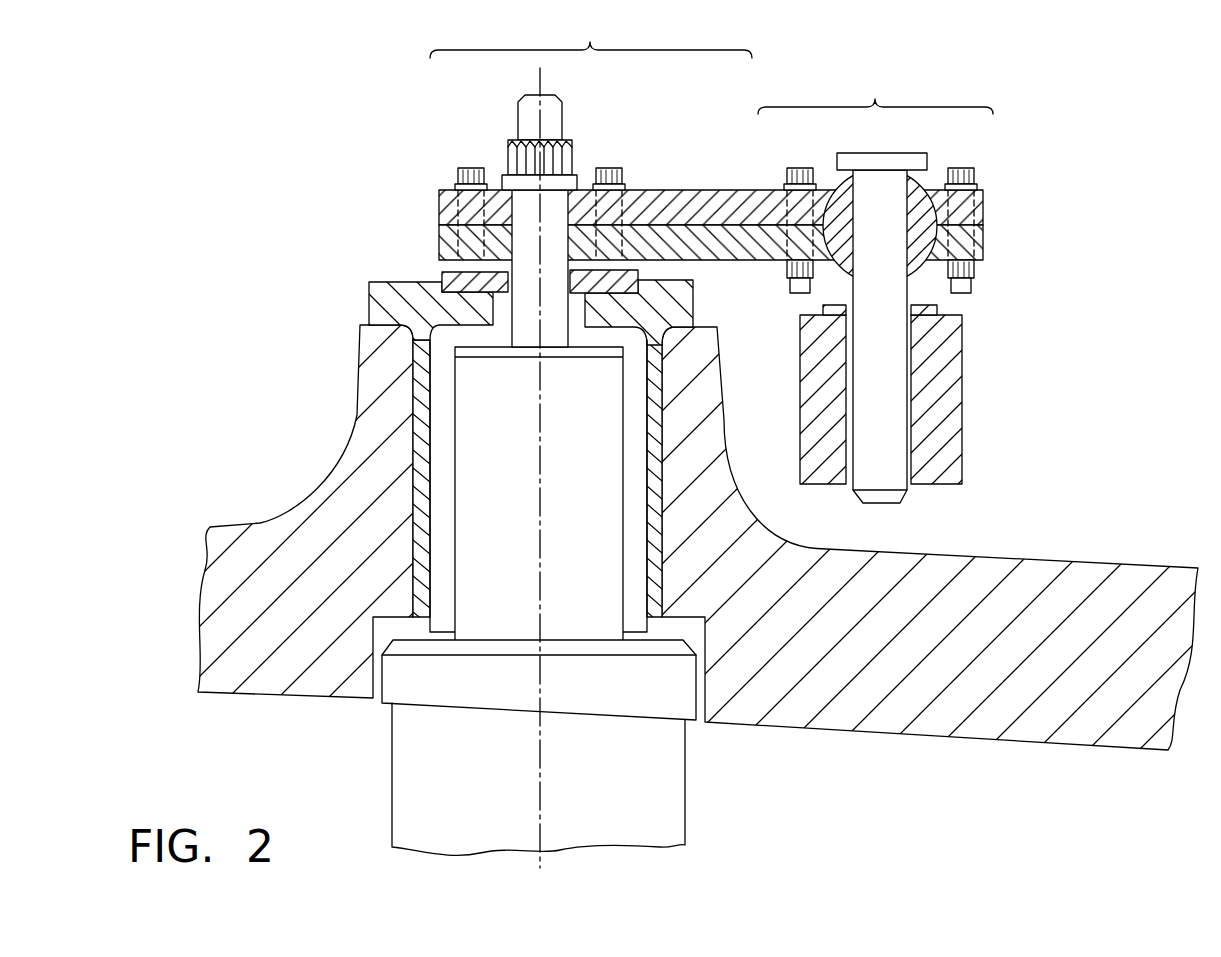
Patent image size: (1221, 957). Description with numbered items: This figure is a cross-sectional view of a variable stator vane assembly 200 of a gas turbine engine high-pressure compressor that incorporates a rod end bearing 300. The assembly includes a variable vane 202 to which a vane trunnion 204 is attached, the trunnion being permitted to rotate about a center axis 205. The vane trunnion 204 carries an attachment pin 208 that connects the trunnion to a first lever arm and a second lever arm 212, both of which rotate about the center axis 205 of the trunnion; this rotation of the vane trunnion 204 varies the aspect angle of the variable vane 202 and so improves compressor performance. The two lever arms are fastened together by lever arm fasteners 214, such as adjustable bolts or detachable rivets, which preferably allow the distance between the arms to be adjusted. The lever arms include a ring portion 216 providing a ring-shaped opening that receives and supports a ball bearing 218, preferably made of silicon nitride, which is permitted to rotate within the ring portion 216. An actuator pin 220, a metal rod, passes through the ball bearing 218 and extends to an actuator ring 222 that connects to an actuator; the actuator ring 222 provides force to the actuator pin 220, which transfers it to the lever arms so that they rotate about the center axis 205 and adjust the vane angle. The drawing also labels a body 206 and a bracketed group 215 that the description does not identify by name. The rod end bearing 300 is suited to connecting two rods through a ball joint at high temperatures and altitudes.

The variable stator vane assembly 200 is at (323, 274).
The variable vane 202 is at (403, 760).
The vane trunnion 204 is at (523, 498).
The center axis 205 is at (545, 80).
The housing 206 is at (841, 720).
The attachment pin 208 is at (528, 270).
The second lever arm 212 is at (723, 258).
The lever arm fasteners 214 is at (468, 166).
The bolt assembly 215 is at (590, 40).
The ring portion 216 is at (875, 97).
The ball bearing 218 is at (918, 268).
The actuator pin 220 is at (892, 155).
The actuator ring 222 is at (950, 417).
The rod end bearing 300 is at (957, 161).